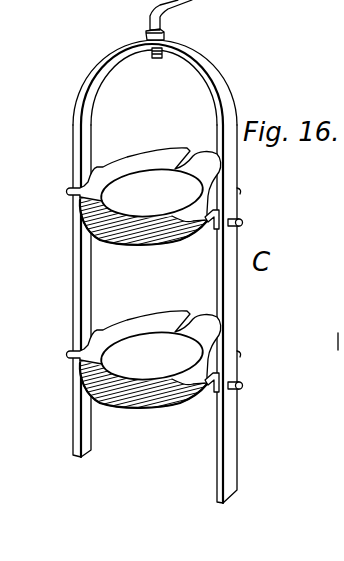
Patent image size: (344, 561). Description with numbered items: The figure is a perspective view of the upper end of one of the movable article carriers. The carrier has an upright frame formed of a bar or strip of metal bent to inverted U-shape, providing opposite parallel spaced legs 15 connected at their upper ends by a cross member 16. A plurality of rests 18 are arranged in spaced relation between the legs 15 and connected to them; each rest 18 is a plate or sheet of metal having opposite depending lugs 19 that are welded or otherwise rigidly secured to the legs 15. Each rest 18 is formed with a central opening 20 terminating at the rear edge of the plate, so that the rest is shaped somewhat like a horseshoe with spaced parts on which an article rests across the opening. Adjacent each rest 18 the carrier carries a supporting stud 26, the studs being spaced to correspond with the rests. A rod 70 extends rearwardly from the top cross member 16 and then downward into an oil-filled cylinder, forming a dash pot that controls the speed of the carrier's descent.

The legs 15 is at (80, 273).
The cross member 16 is at (213, 73).
The rest 18 is at (157, 297).
The depending lugs 19 is at (208, 230).
The central opening 20 is at (152, 274).
The supporting stud 26 is at (242, 223).
The rod 70 is at (182, 13).